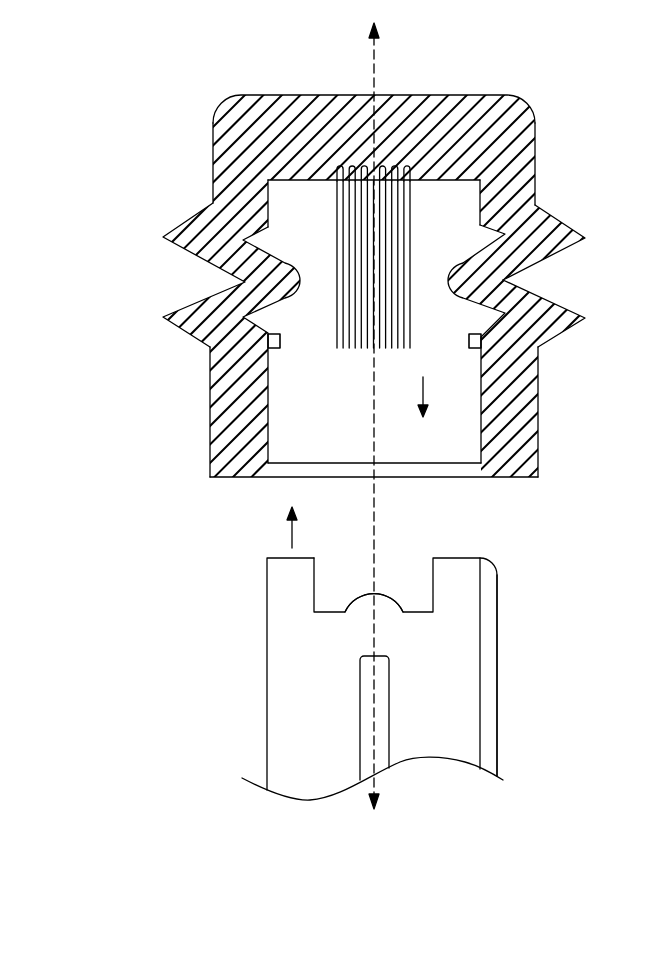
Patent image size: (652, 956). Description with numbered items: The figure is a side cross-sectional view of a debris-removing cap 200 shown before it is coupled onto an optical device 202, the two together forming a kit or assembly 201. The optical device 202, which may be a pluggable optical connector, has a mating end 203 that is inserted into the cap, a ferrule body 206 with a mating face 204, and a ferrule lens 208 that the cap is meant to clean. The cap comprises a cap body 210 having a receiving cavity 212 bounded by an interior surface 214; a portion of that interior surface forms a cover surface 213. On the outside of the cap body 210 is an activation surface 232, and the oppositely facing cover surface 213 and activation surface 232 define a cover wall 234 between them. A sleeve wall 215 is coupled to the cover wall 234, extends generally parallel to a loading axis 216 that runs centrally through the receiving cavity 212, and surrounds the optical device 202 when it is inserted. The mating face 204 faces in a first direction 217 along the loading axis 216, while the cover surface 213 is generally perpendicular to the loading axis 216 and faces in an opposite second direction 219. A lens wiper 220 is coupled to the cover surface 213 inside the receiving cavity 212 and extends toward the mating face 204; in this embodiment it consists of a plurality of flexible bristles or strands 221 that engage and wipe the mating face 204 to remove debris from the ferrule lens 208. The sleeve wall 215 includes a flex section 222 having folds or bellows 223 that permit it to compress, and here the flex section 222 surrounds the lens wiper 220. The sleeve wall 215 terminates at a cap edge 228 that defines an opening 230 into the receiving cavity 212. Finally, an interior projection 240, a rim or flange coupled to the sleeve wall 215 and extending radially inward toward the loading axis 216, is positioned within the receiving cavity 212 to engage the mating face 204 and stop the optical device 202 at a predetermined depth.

The debris-removing cap 200 is at (532, 70).
The kit or assembly 201 is at (163, 95).
The optical device 202 is at (544, 558).
The mating end 203 is at (494, 568).
The mating face 204 is at (472, 536).
The ferrule body 206 is at (268, 576).
The ferrule lens 208 is at (386, 596).
The cap body 210 is at (536, 140).
The receiving cavity 212 is at (305, 452).
The cover surface 213 is at (438, 183).
The interior surface 214 is at (310, 194).
The sleeve wall 215 is at (215, 410).
The loading axis 216 is at (378, 46).
The first direction 217 is at (290, 538).
The second direction 219 is at (426, 392).
The lens wiper 220 is at (510, 222).
The flexible bristles or strands 221 is at (336, 300).
The flex section 222 is at (572, 284).
The folds or bellows 223 is at (232, 307).
The cap edge 228 is at (233, 478).
The opening 230 is at (268, 480).
The activation surface 232 is at (281, 88).
The cover wall 234 is at (331, 110).
The interior projection 240 is at (278, 350).